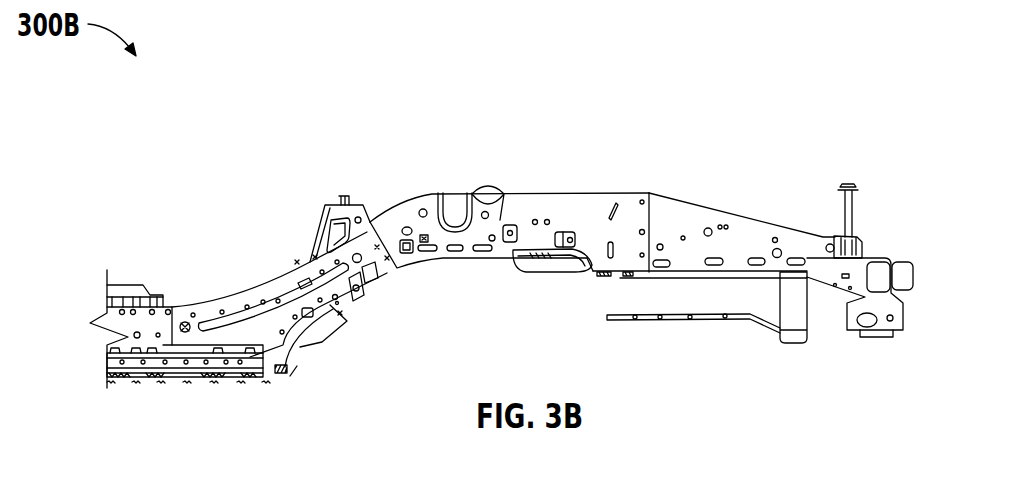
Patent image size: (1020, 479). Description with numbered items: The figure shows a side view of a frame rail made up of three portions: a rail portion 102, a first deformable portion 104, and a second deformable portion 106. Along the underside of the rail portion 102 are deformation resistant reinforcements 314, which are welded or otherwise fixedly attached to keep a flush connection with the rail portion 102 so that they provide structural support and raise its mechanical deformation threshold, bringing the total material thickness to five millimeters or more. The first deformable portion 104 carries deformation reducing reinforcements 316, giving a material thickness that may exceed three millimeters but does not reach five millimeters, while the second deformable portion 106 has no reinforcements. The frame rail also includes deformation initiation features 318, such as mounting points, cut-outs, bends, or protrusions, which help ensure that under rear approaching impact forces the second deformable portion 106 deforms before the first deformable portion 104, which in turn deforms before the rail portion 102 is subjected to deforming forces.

The rail portion 102 is at (107, 130).
The first deformable portion 104 is at (365, 130).
The second deformable portion 106 is at (648, 130).
The deformation resistant reinforcements 314 is at (178, 380).
The deformation reducing reinforcements 316 is at (457, 259).
The deformation initiation features 318 is at (670, 232).